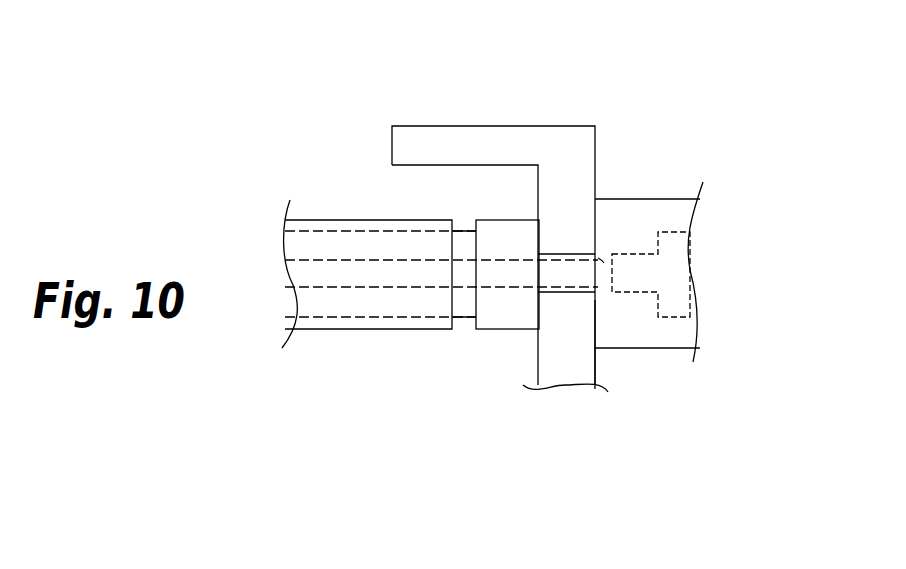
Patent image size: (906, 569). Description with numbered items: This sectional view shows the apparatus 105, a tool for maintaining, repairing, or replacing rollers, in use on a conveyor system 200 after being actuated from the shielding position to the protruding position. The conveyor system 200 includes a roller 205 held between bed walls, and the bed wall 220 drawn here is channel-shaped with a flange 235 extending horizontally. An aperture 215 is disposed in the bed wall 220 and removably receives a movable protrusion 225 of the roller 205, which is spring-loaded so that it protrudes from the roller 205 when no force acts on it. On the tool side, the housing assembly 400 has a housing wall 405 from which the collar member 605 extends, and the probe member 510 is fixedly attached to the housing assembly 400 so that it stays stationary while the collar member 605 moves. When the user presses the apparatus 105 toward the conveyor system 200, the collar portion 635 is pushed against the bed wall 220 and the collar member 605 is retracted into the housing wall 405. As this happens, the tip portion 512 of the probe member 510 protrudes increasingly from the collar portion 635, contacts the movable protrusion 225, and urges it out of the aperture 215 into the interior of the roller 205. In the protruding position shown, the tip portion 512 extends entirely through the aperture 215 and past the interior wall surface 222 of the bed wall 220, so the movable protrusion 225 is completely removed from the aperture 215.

The apparatus 105 is at (302, 108).
The conveyor system 200 is at (624, 102).
The roller 205 is at (683, 330).
The aperture 215 is at (562, 254).
The bed wall 220 is at (568, 373).
The interior wall surface 222 is at (593, 362).
The movable protrusion 225 is at (635, 258).
The flange 235 is at (432, 126).
The housing assembly 400 is at (290, 168).
The housing wall 405 is at (335, 220).
The probe member 510 is at (345, 273).
The tip portion 512 is at (602, 277).
The collar member 605 is at (460, 318).
The collar portion 635 is at (503, 237).